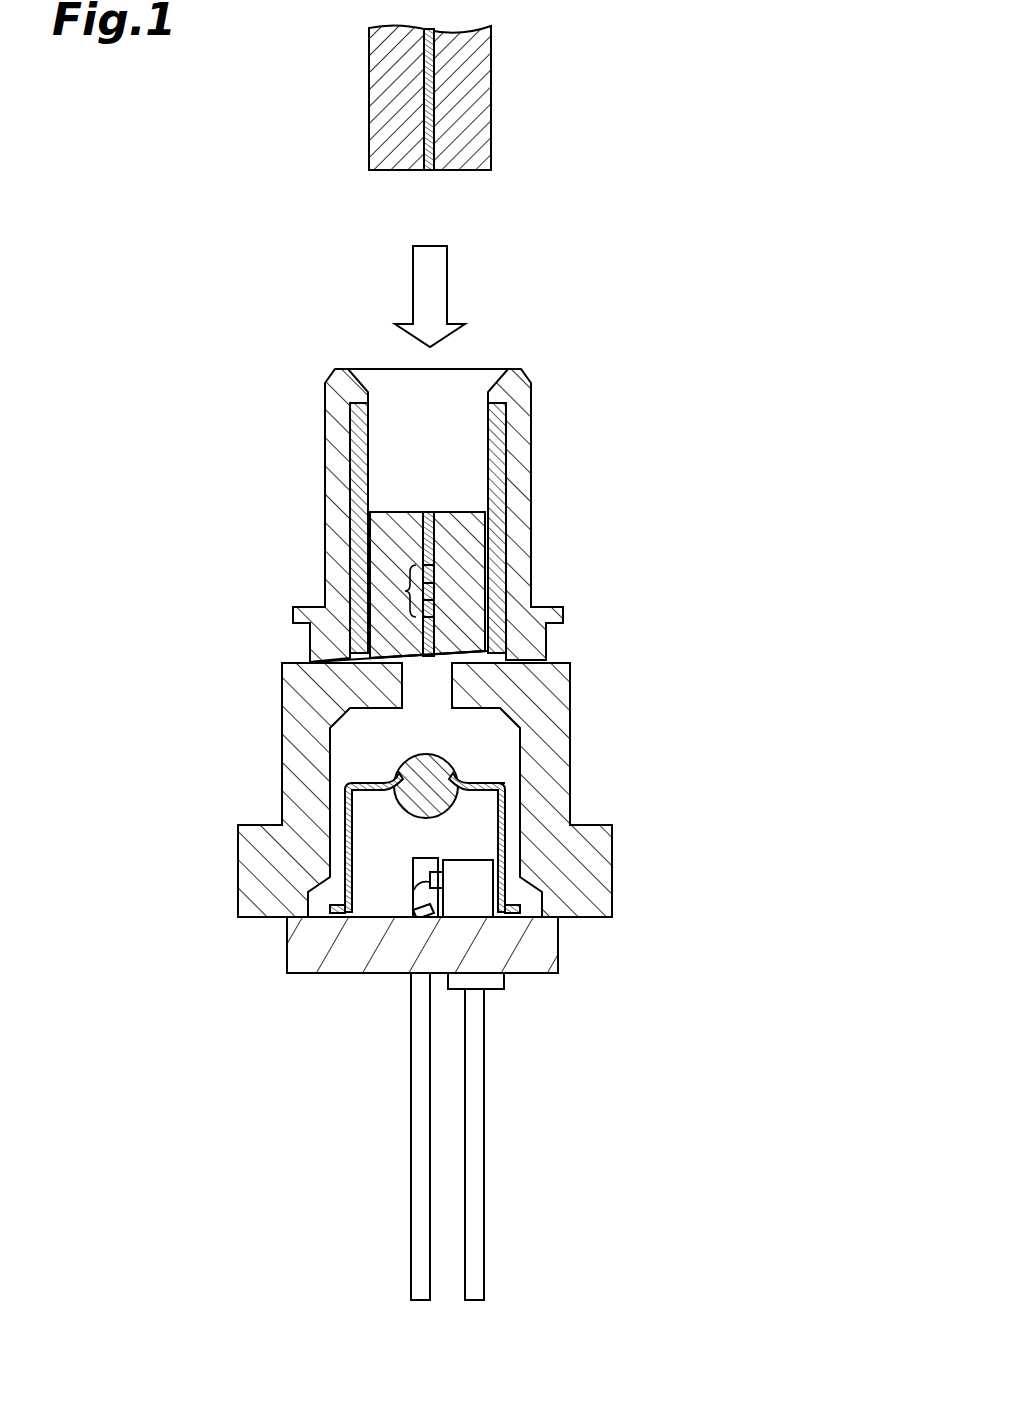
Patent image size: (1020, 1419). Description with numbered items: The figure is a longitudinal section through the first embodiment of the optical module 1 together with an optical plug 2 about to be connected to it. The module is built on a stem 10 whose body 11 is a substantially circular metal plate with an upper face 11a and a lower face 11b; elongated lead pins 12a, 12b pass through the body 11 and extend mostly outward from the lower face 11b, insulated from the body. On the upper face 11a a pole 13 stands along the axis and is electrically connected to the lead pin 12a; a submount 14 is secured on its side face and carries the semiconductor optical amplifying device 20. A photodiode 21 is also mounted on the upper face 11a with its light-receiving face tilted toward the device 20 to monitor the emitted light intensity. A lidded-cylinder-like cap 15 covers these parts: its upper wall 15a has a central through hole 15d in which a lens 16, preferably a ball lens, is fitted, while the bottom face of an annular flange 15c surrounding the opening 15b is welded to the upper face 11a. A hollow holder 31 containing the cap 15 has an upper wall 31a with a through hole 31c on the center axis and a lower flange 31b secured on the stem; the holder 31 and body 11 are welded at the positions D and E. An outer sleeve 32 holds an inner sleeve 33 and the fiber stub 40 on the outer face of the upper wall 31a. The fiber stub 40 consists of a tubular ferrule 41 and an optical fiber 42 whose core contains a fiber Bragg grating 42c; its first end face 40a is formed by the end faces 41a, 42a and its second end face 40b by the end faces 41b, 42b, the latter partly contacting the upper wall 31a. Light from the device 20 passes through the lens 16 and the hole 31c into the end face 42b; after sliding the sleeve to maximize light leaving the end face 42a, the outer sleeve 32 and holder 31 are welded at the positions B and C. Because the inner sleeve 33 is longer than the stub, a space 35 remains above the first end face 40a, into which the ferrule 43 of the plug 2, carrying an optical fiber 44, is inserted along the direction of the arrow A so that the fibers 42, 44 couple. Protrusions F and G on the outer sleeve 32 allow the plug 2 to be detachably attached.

The optical module 1 is at (722, 350).
The optical plug 2 is at (525, 96).
The stem 10 is at (409, 1103).
The body 11 is at (451, 973).
The upper face 11a is at (378, 906).
The lower face 11b is at (303, 975).
The lead pin 12a is at (484, 1193).
The lead pin 12b is at (411, 1193).
The pole 13 is at (476, 888).
The submount 14 is at (443, 878).
The cap 15 is at (422, 819).
The upper wall 15a is at (487, 800).
The opening 15b is at (363, 913).
The annular flange 15c is at (330, 902).
The through hole 15d is at (506, 848).
The lens 16 is at (455, 758).
The semiconductor optical amplifying device 20 is at (418, 915).
The photodiode 21 is at (429, 890).
The holder 31 is at (283, 767).
The upper wall 31a is at (292, 663).
The flange 31b is at (602, 900).
The through hole 31c is at (402, 686).
The outer sleeve 32 is at (531, 408).
The inner sleeve 33 is at (500, 443).
The space 35 is at (462, 422).
The fiber stub 40 is at (411, 573).
The first end face 40a is at (374, 512).
The second end face 40b is at (454, 672).
The ferrule 41 is at (470, 575).
The first end face 41a is at (462, 512).
The second end face 41b is at (448, 664).
The optical fiber 42 is at (434, 540).
The first end face 42a is at (424, 512).
The second end face 42b is at (420, 663).
The fiber Bragg grating 42c is at (408, 591).
The ferrule 43 is at (491, 138).
The optical fiber 44 is at (434, 97).
The insertion direction A is at (447, 280).
The welding position B is at (305, 660).
The welding position C is at (550, 660).
The welding position D is at (285, 923).
The welding position E is at (566, 920).
The protrusion F is at (295, 609).
The protrusion G is at (560, 606).